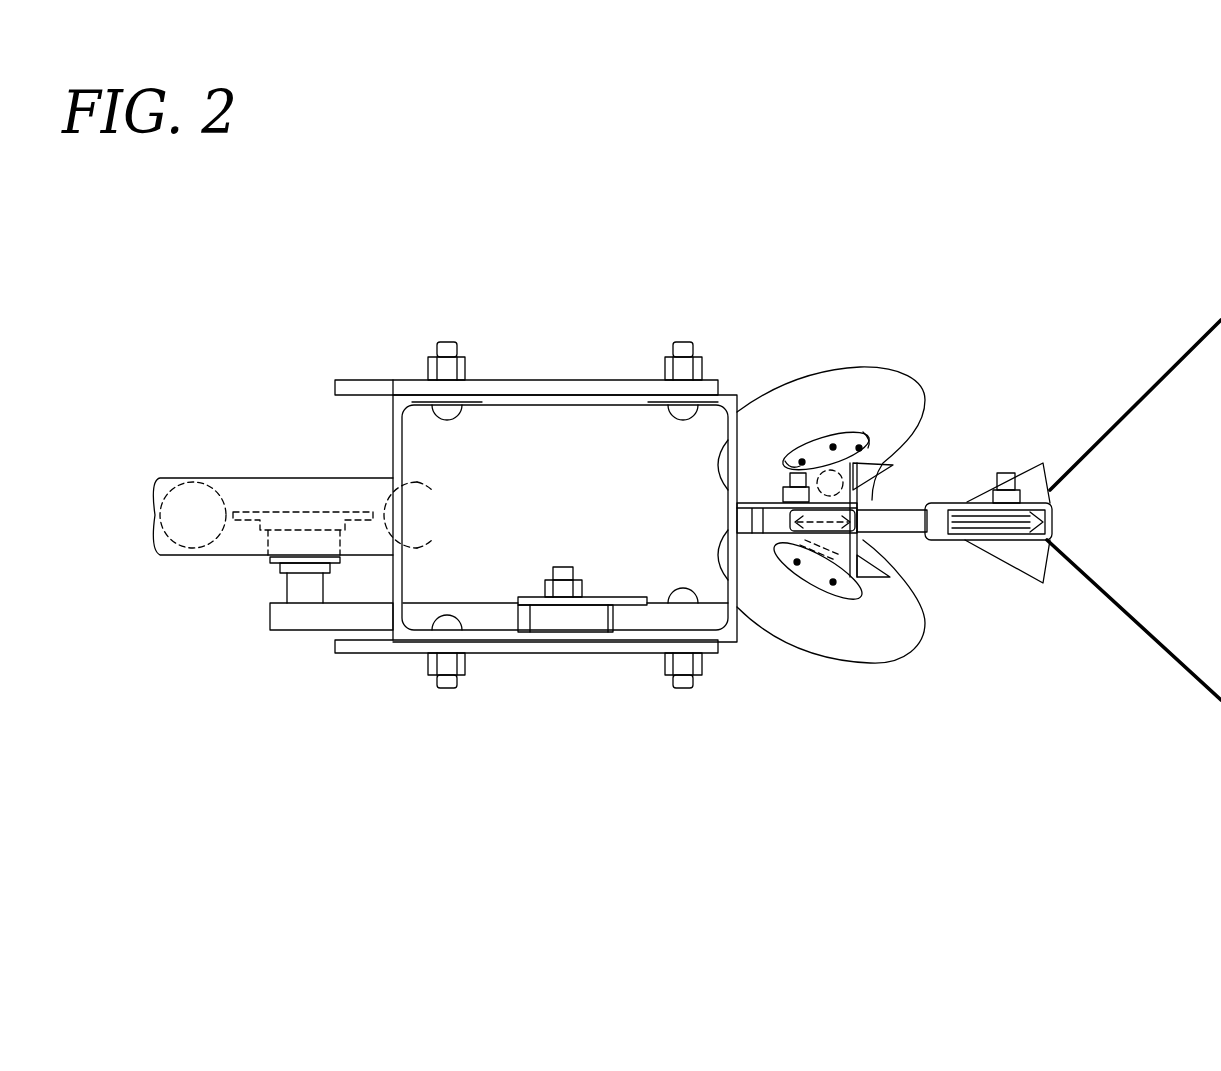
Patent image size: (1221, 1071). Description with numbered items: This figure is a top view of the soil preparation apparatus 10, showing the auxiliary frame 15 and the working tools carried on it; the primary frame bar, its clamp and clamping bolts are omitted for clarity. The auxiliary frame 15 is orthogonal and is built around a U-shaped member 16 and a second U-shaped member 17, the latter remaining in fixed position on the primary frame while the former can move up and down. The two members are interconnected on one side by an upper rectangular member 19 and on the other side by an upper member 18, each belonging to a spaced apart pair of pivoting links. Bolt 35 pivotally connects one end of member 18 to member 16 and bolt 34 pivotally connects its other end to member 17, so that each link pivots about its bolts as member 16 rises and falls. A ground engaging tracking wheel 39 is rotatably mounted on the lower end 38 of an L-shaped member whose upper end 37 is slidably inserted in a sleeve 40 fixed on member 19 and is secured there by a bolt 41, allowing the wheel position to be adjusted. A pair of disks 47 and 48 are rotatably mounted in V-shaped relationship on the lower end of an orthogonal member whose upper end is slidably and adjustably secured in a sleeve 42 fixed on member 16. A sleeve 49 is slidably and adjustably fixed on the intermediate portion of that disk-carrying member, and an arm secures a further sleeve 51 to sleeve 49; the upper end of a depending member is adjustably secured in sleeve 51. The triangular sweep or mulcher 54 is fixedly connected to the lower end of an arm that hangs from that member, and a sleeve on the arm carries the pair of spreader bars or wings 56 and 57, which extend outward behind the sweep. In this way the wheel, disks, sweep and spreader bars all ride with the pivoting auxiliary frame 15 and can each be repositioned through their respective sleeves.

The soil preparation apparatus 10 is at (520, 233).
The auxiliary frame 15 is at (567, 367).
The U-shaped member 16 is at (708, 410).
The U-shaped member 17 is at (405, 593).
The upper member 18 is at (533, 380).
The upper rectangular member 19 is at (573, 653).
The bolt 34 is at (437, 348).
The bolt 35 is at (692, 350).
The upper end of L-shaped member 37 is at (588, 615).
The lower end of L-shaped member 38 is at (288, 627).
The ground engaging tracking wheel 39 is at (313, 468).
The sleeve 40 is at (523, 590).
The bolt 41 is at (560, 567).
The sleeve 42 is at (723, 512).
The disk 47 is at (855, 368).
The disk 48 is at (843, 650).
The sleeve 49 is at (880, 498).
The sleeve 51 is at (943, 540).
The triangular sweep or mulcher 54 is at (1018, 583).
The spreader bar or wing 56 is at (1135, 410).
The spreader bar or wing 57 is at (1142, 620).